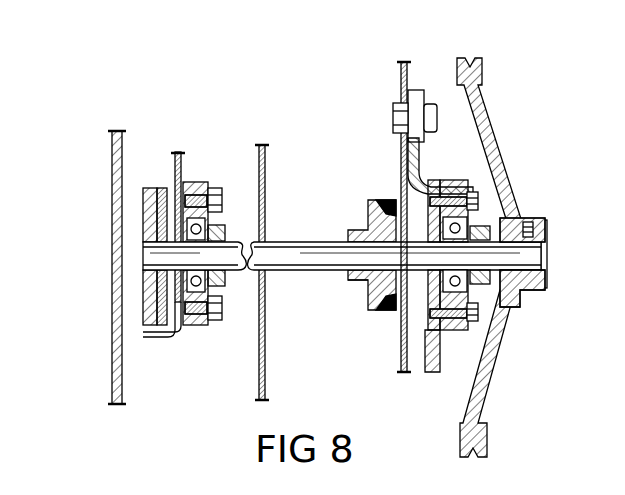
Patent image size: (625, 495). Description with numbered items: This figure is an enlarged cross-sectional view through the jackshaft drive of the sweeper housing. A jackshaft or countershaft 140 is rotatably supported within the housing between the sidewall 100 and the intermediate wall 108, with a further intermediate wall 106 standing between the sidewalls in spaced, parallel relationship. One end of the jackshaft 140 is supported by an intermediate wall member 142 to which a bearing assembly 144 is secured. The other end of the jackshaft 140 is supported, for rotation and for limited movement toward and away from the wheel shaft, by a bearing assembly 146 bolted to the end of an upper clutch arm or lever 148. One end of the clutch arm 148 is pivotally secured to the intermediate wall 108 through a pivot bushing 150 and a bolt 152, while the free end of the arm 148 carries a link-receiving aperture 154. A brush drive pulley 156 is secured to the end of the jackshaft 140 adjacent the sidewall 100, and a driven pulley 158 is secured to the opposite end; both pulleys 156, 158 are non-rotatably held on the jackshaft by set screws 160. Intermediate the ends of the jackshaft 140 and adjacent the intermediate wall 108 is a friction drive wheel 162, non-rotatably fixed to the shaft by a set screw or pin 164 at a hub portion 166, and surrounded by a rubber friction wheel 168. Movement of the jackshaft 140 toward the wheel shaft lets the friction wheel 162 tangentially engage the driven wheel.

The sidewall 100 is at (112, 198).
The intermediate wall 106 is at (266, 166).
The intermediate wall 108 is at (414, 53).
The jackshaft 140 is at (291, 268).
The intermediate wall member 142 is at (182, 160).
The bearing assembly 144 is at (217, 176).
The bearing assembly 146 is at (477, 177).
The upper clutch arm 148 is at (425, 165).
The pivot bushing 150 is at (424, 96).
The bolt 152 is at (437, 118).
The link-receiving aperture 154 is at (440, 356).
The brush drive pulley 156 is at (142, 210).
The driven pulley 158 is at (495, 228).
The set screws 160 is at (126, 227).
The friction drive wheel 162 is at (360, 212).
The set screw or pin 164 is at (357, 253).
The hub portion 166 is at (358, 282).
The rubber friction wheel 168 is at (378, 200).